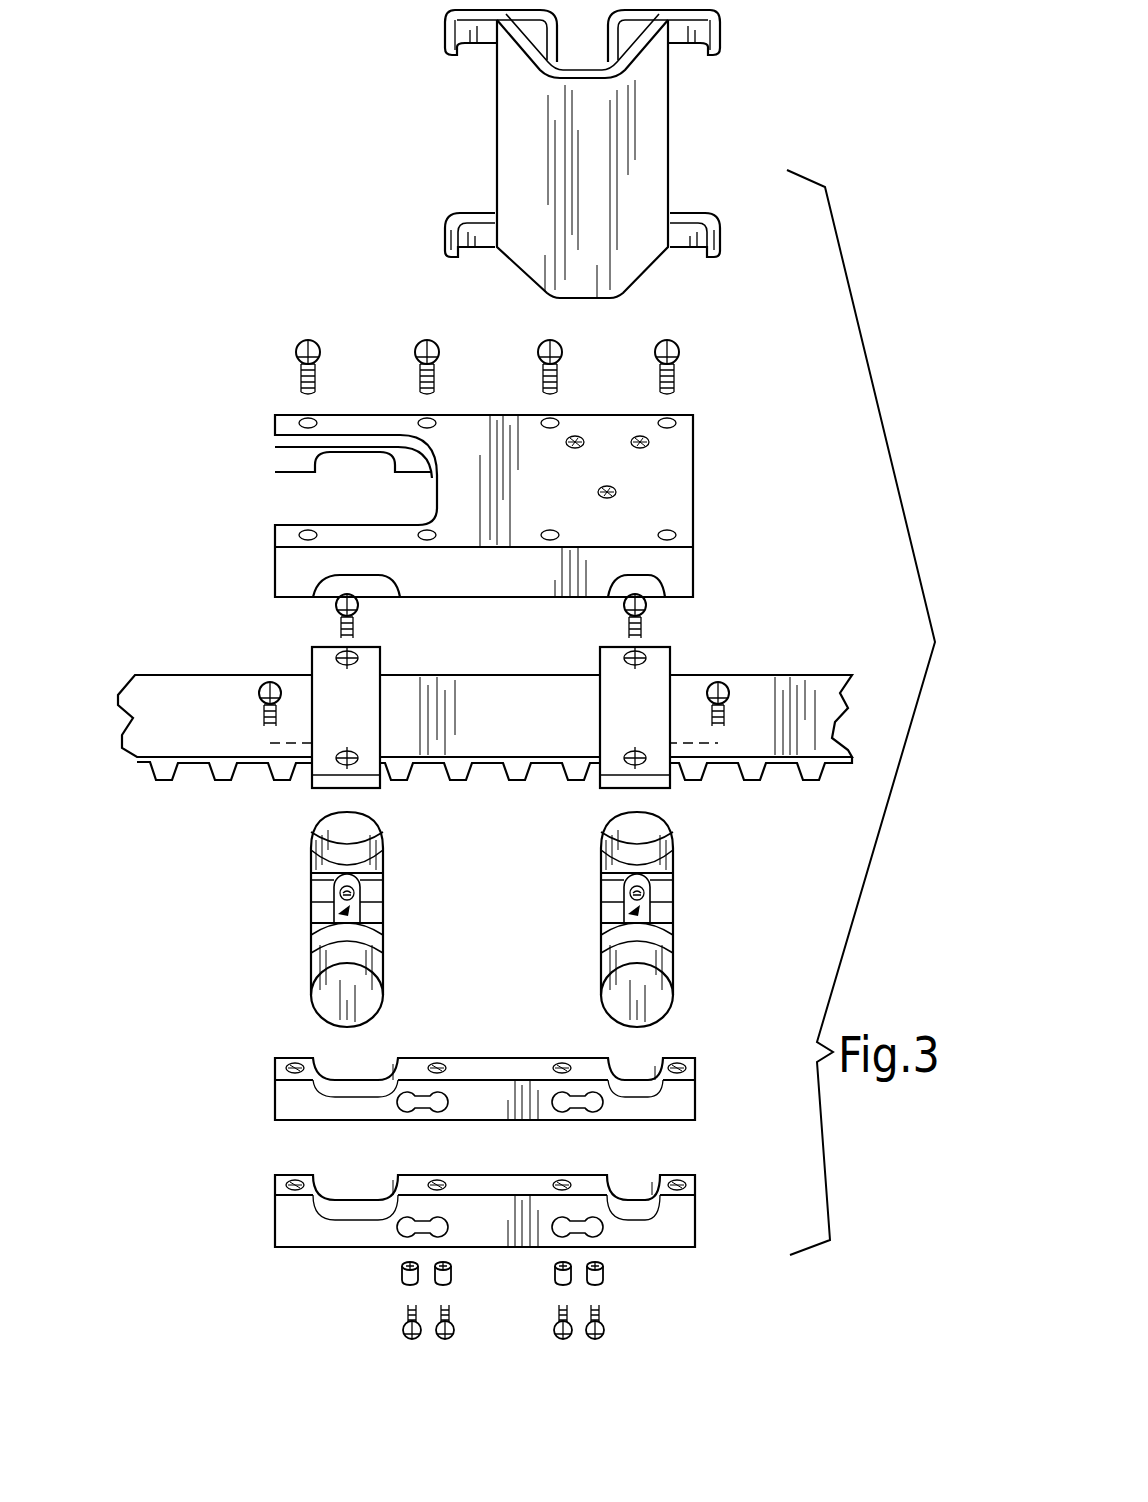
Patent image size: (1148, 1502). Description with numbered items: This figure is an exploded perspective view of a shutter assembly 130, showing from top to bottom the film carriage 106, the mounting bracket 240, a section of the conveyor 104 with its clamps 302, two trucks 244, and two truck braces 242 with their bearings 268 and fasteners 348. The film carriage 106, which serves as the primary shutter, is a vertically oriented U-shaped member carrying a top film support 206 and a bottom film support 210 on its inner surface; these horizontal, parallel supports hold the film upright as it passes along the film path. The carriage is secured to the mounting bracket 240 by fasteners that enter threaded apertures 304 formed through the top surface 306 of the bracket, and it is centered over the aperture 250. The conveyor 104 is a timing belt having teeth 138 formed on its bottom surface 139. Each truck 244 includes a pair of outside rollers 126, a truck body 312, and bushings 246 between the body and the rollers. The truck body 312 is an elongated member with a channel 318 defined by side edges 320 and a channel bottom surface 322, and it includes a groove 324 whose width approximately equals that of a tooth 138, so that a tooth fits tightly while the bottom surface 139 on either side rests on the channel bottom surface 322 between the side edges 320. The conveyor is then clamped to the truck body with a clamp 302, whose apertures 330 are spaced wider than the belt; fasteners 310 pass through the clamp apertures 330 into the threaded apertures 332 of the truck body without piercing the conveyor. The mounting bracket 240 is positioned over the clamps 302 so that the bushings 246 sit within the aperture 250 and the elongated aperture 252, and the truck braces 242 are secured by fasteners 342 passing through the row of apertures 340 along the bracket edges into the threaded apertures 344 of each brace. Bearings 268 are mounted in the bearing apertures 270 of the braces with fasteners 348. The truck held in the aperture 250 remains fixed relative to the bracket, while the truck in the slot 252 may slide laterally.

The conveyor 104 is at (175, 668).
The film carriage 106 is at (494, 152).
The outside rollers 126 is at (318, 825).
The shutter assembly 130 is at (362, 145).
The conveyor teeth 138 is at (628, 809).
The conveyor bottom surface 139 is at (473, 822).
The top film support 206 is at (722, 8).
The bottom film support 210 is at (695, 213).
The mounting bracket 240 is at (529, 792).
The truck braces 242 is at (486, 1142).
The trucks 244 is at (465, 905).
The bushings 246 is at (389, 912).
The aperture 250 is at (625, 600).
The elongated aperture 252 is at (260, 1114).
The bearings 268 is at (640, 1292).
The bearing apertures 270 is at (420, 1195).
The clamps 302 is at (562, 693).
The threaded apertures 304 is at (640, 436).
The top surface 306 is at (549, 485).
The fasteners 310 is at (262, 685).
The truck body 312 is at (459, 879).
The channel 318 is at (708, 923).
The side edges 320 is at (491, 901).
The channel bottom surface 322 is at (488, 929).
The groove 324 is at (496, 950).
The clamp apertures 330 is at (347, 752).
The threaded apertures 332 is at (551, 849).
The apertures 340 is at (430, 418).
The fasteners 342 is at (427, 340).
The threaded apertures 344 is at (285, 1070).
The fasteners 348 is at (420, 1340).